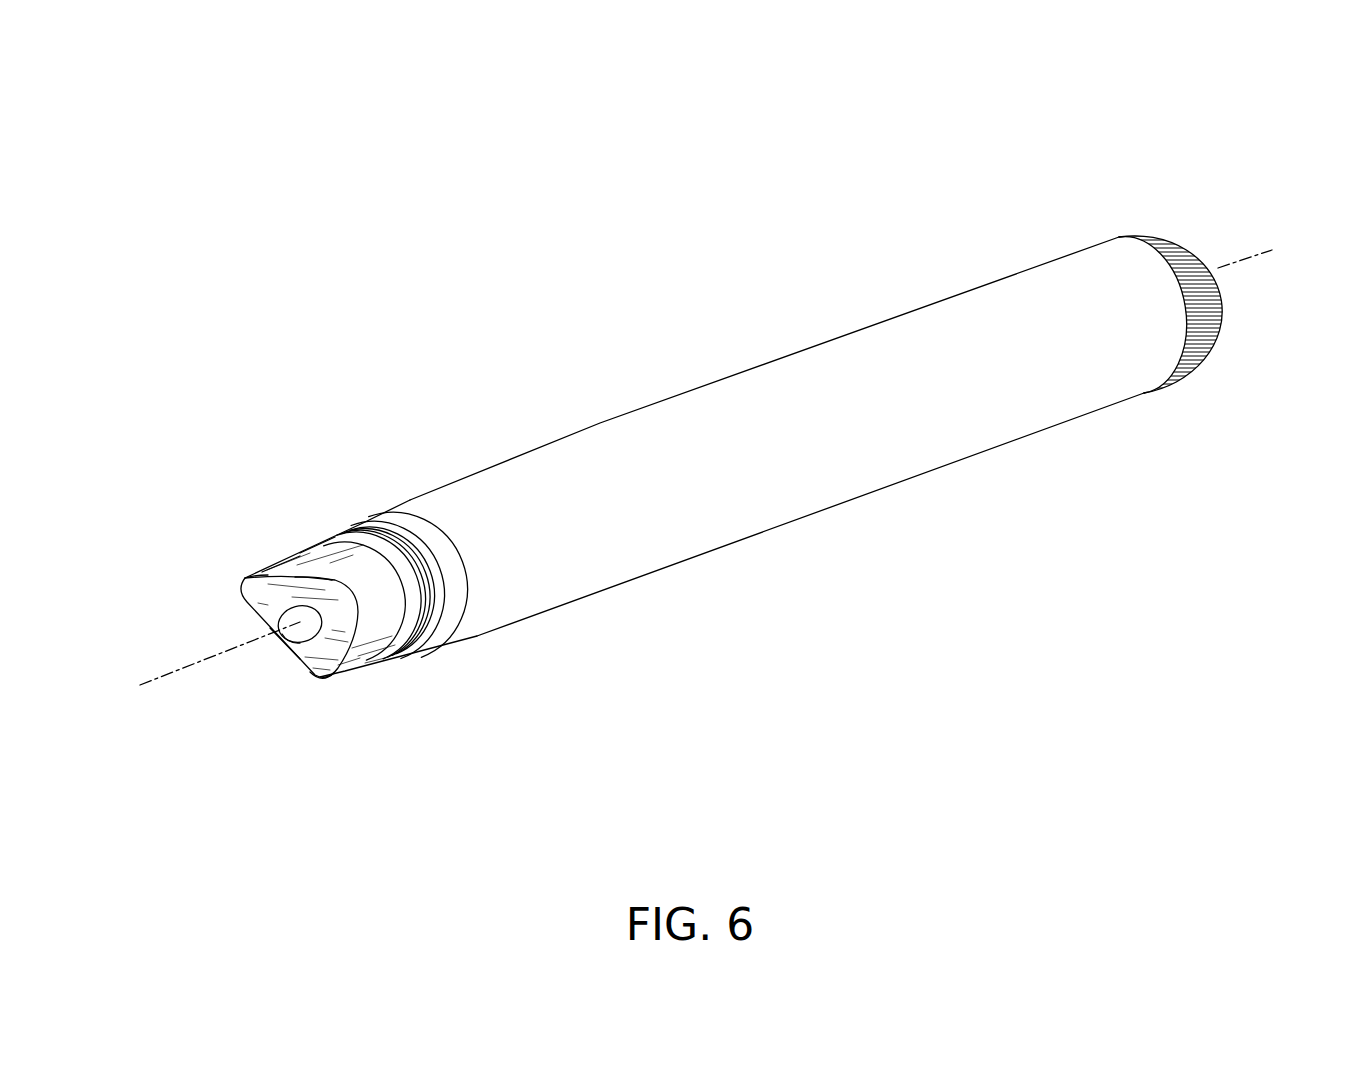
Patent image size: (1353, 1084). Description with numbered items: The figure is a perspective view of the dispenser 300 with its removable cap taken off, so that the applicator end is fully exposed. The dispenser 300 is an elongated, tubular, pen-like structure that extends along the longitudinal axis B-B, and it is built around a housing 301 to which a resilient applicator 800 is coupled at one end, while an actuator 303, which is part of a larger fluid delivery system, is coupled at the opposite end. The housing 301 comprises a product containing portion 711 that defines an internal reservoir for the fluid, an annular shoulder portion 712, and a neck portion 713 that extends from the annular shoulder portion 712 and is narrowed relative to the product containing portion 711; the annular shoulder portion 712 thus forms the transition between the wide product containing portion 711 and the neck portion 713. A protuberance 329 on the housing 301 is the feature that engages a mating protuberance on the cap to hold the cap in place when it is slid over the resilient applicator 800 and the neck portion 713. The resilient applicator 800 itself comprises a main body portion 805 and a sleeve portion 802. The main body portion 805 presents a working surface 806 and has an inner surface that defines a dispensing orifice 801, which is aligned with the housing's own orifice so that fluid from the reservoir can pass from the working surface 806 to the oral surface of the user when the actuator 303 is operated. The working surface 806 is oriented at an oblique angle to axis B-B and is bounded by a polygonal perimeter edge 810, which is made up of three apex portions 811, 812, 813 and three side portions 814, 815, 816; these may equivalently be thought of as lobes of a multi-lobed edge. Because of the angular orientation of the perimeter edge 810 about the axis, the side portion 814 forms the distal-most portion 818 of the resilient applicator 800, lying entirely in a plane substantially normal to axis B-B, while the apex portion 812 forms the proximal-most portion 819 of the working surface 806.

The dispenser 300 is at (790, 150).
The housing 301 is at (740, 381).
The actuator 303 is at (1117, 218).
The product containing portion 711 is at (645, 452).
The protuberance 329 is at (385, 517).
The annular shoulder portion 712 is at (360, 527).
The neck portion 713 is at (407, 657).
The sleeve portion 802 is at (400, 660).
The main body portion 805 is at (465, 645).
The side portion 815 is at (380, 650).
The polygonal perimeter edge 810 is at (343, 660).
The resilient applicator 800 is at (302, 534).
The working surface 806 is at (257, 595).
The side portion 816 is at (285, 640).
The dispensing orifice 801 is at (303, 652).
The apex portion 813 is at (245, 585).
The distal-most portion 818 is at (280, 553).
The apex portion 811 is at (367, 575).
The side portion 814 is at (312, 577).
The proximal-most portion 819 is at (312, 660).
The apex portion 812 is at (325, 675).